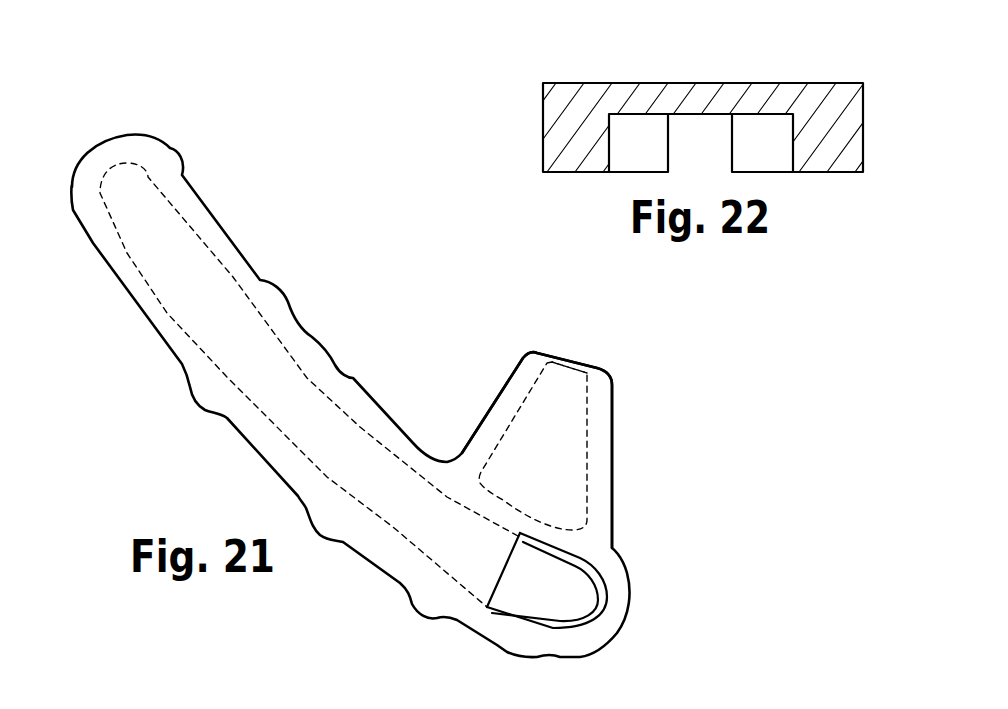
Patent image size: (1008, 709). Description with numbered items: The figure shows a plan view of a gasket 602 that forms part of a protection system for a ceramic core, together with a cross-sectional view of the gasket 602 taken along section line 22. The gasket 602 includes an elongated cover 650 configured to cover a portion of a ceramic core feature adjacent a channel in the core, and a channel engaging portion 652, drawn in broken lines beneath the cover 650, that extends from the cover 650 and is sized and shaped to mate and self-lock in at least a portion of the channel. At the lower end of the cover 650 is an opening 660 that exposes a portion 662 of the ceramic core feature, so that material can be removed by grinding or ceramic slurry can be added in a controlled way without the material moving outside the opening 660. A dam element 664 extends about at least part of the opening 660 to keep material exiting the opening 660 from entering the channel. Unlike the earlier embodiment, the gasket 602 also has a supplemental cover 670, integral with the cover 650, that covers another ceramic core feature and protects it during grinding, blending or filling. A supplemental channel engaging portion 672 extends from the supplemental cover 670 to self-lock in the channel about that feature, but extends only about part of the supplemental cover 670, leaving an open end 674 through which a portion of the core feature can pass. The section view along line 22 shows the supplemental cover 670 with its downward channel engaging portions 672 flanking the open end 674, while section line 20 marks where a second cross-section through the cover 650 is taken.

In FIG. 21, the gasket 602 is at (250, 455).
In FIG. 21, the cover 650 is at (237, 328).
In FIG. 21, the channel engaging portion 652 is at (222, 263).
In FIG. 21, the opening 660 is at (578, 605).
In FIG. 21, the portion of ceramic core feature 662 is at (566, 597).
In FIG. 21, the dam element 664 is at (580, 558).
In FIG. 21, the supplemental cover 670 is at (565, 447).
In FIG. 22, the supplemental cover 670 is at (707, 100).
In FIG. 21, the supplemental channel engaging portion 672 is at (590, 490).
In FIG. 22, the supplemental channel engaging portion 672 is at (580, 142).
In FIG. 21, the open end 674 is at (562, 378).
In FIG. 22, the open end 674 is at (705, 153).
In FIG. 21, the section line 20- 20 is at (553, 517).
In FIG. 21, the section line 22- 22 is at (485, 397).